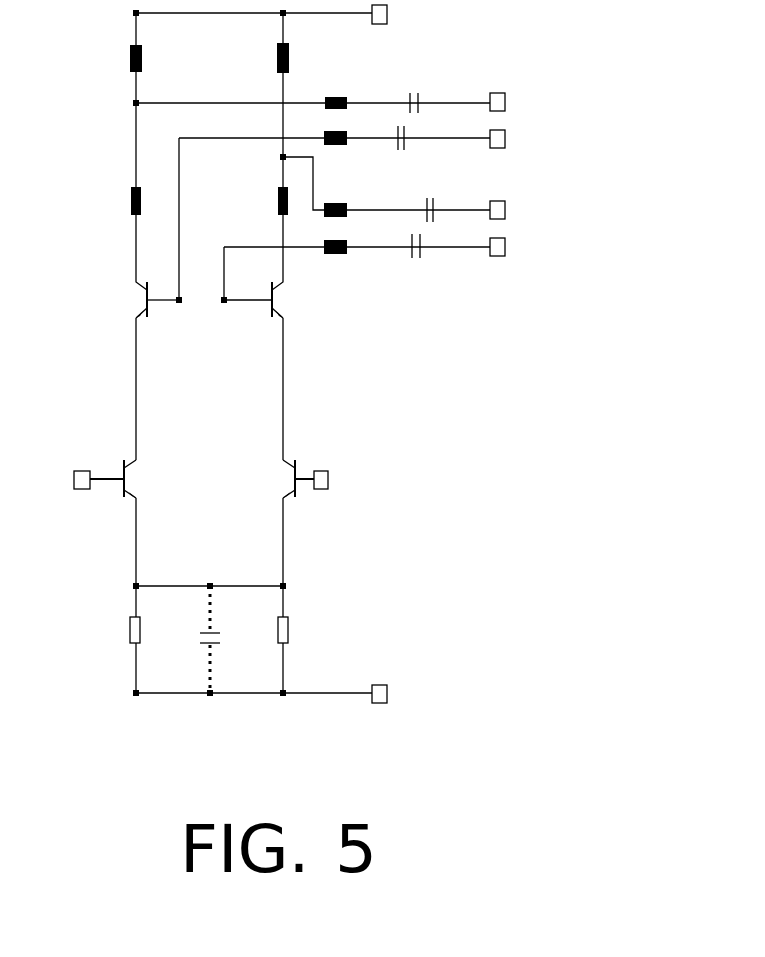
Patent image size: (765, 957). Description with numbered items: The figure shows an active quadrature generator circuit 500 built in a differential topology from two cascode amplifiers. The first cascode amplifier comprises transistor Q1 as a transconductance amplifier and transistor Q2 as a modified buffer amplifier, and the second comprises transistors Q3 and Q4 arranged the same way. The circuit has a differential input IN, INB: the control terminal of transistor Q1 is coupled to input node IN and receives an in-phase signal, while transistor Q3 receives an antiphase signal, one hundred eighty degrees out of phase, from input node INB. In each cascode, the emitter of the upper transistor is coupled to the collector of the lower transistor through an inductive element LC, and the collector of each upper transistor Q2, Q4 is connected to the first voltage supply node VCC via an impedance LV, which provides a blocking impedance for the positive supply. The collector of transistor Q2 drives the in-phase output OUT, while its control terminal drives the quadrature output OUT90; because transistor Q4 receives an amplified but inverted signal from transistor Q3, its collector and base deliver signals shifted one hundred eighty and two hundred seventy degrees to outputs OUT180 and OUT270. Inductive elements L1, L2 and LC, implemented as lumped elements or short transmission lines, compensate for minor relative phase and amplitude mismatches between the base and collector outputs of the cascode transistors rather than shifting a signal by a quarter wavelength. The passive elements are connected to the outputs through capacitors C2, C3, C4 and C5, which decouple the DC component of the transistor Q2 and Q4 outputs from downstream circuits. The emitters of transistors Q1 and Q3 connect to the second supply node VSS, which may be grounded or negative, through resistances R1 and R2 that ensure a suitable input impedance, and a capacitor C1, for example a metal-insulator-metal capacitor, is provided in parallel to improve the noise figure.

The active quadrature generator circuit 500 is at (74, 41).
The impedance LV is at (140, 67).
The inductive element LC is at (128, 203).
The inductive element L1 is at (331, 203).
The inductive element L2 is at (332, 267).
The capacitor C1 is at (200, 640).
The capacitor C2 is at (408, 94).
The capacitor C3 is at (401, 152).
The capacitor C4 is at (433, 195).
The capacitor C5 is at (416, 259).
The first transistor Q1 is at (131, 481).
The second transistor Q2 is at (141, 299).
The transistor Q3 is at (289, 478).
The transistor Q4 is at (287, 299).
The resistance R1 is at (128, 631).
The resistance R2 is at (289, 632).
The input node IN is at (72, 481).
The input node INB is at (330, 484).
The in-phase signal output OUT is at (543, 101).
The quadrature-phase signal output OUT90 is at (551, 138).
The output OUT180 is at (564, 209).
The output OUT270 is at (564, 246).
The first voltage supply node VCC is at (391, 14).
The second supply node VSS is at (391, 694).